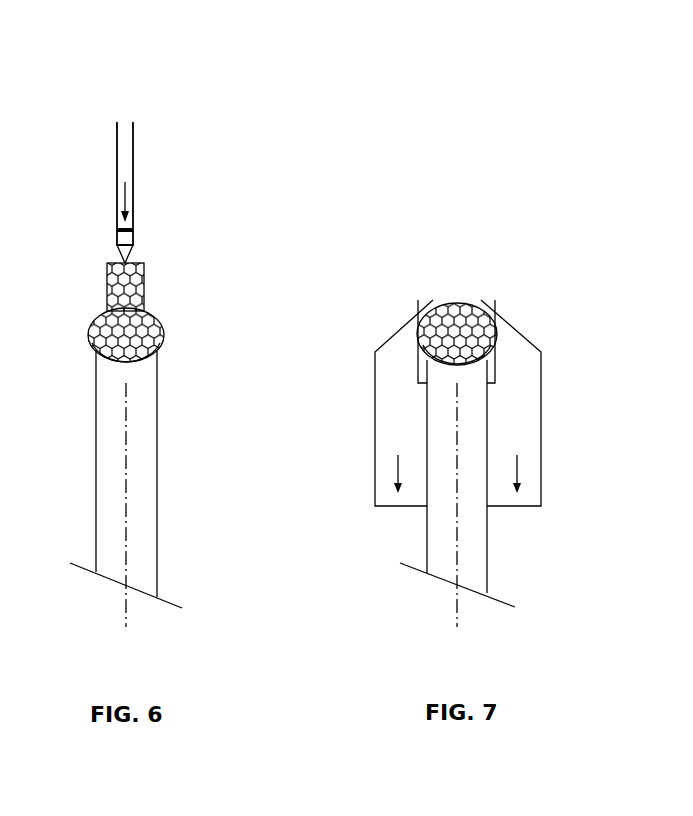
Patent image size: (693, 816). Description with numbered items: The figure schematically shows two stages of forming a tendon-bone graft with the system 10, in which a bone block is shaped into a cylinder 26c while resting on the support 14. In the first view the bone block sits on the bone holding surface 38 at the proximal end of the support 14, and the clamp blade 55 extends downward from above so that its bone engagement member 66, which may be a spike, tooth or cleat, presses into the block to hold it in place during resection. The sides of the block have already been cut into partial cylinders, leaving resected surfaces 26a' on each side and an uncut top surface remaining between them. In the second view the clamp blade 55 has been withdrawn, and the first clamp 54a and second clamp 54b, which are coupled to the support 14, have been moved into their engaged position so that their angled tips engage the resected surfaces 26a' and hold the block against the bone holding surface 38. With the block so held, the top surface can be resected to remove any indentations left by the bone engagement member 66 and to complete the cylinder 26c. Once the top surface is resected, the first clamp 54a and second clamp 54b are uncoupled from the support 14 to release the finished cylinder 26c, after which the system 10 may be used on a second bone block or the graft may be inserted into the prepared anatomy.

In FIG. 6, the system 10 is at (238, 89).
In FIG. 7, the system 10 is at (570, 179).
In FIG. 6, the clamp blade 55 is at (142, 182).
In FIG. 6, the bone engagement member 66 is at (129, 259).
In FIG. 6, the resected surface 26a' is at (129, 336).
In FIG. 7, the cylinder 26c is at (457, 303).
In FIG. 6, the bone holding surface 38 is at (128, 369).
In FIG. 7, the bone holding surface 38 is at (462, 370).
In FIG. 6, the support 14 is at (172, 540).
In FIG. 7, the support 14 is at (503, 570).
In FIG. 7, the first clamp 54a is at (360, 460).
In FIG. 7, the second clamp 54b is at (554, 467).